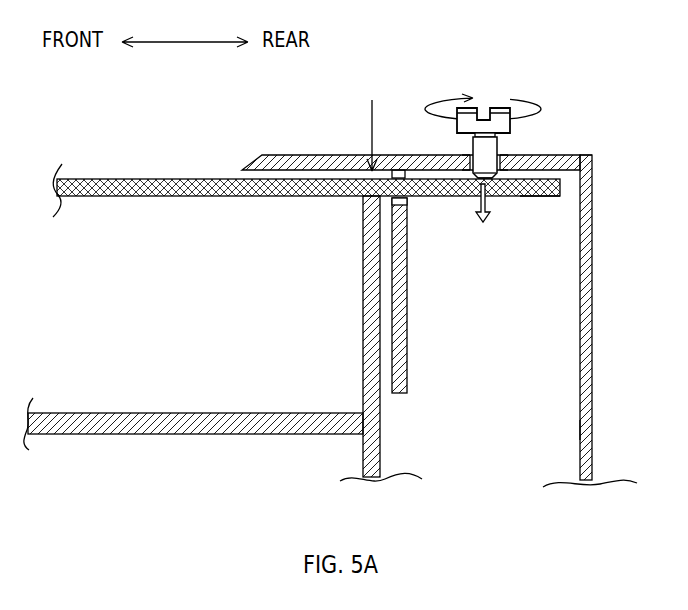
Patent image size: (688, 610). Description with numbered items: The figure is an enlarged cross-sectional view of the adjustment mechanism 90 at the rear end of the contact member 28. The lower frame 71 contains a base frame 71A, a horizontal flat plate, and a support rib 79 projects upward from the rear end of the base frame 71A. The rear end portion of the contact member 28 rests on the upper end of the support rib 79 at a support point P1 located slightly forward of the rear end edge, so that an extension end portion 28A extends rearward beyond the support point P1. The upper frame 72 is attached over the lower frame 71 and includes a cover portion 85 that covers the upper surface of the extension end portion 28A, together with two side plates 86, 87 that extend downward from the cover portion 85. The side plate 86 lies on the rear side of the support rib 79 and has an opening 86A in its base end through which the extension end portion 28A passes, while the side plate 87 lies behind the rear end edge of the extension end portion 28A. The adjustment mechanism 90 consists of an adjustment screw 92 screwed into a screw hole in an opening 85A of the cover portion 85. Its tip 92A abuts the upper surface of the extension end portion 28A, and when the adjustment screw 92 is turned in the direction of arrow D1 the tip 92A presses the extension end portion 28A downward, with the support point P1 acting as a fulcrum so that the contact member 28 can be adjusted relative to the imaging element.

The contact member 28 is at (107, 179).
The extension end portion 28A is at (535, 197).
The lower frame 71 is at (227, 351).
The base frame 71A is at (175, 435).
The upper frame 72 is at (592, 157).
The support rib 79 is at (363, 347).
The cover portion 85 is at (334, 155).
The opening 85A is at (498, 158).
The side plate 86 is at (407, 338).
The opening 86A is at (418, 205).
The side plate 87 is at (580, 430).
The adjustment mechanism 90 is at (457, 91).
The adjustment screw 92 is at (487, 108).
The tip 92A is at (478, 178).
The arrow D1 is at (542, 108).
The support point P1 is at (371, 123).